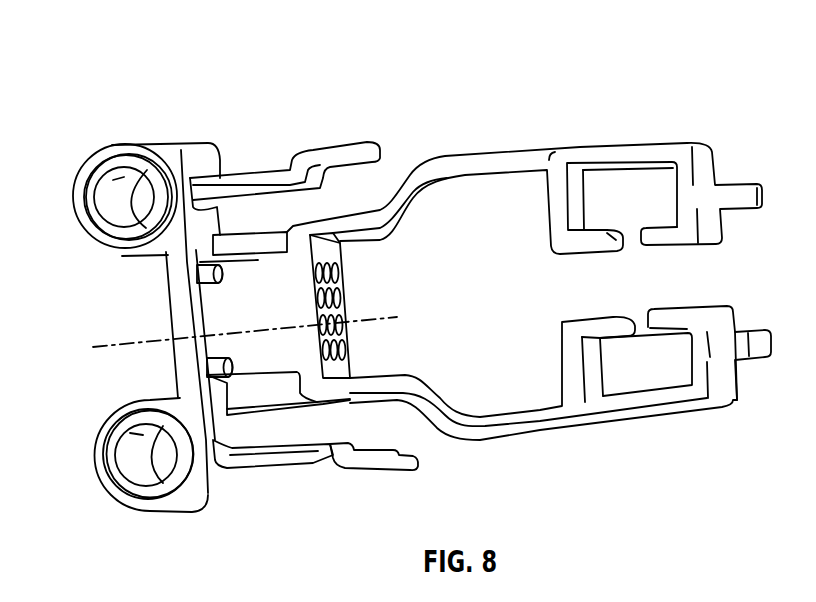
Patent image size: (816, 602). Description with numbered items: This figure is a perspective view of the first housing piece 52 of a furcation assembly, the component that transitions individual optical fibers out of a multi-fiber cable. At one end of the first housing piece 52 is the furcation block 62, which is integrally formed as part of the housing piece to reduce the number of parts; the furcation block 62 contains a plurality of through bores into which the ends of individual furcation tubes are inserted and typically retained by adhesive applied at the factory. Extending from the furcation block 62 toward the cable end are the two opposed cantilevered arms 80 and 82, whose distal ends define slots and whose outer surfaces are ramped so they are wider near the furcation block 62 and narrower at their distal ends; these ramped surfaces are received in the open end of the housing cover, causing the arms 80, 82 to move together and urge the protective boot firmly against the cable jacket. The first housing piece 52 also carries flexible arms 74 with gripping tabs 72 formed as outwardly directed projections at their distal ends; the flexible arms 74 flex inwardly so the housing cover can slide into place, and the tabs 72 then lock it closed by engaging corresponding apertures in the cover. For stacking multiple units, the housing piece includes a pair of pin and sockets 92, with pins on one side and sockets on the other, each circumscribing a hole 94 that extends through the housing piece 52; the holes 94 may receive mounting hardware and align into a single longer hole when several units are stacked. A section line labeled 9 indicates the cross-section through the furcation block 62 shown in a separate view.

The first housing piece 52 is at (583, 98).
The furcation block 62 is at (260, 268).
The gripping tabs 72 is at (394, 472).
The flexible arms 74 is at (293, 470).
The cantilevered arm 80 is at (487, 147).
The cantilevered arm 82 is at (620, 417).
The pin and sockets 92 is at (97, 176).
The holes 94 is at (138, 194).
The section line 9- 9 is at (93, 347).